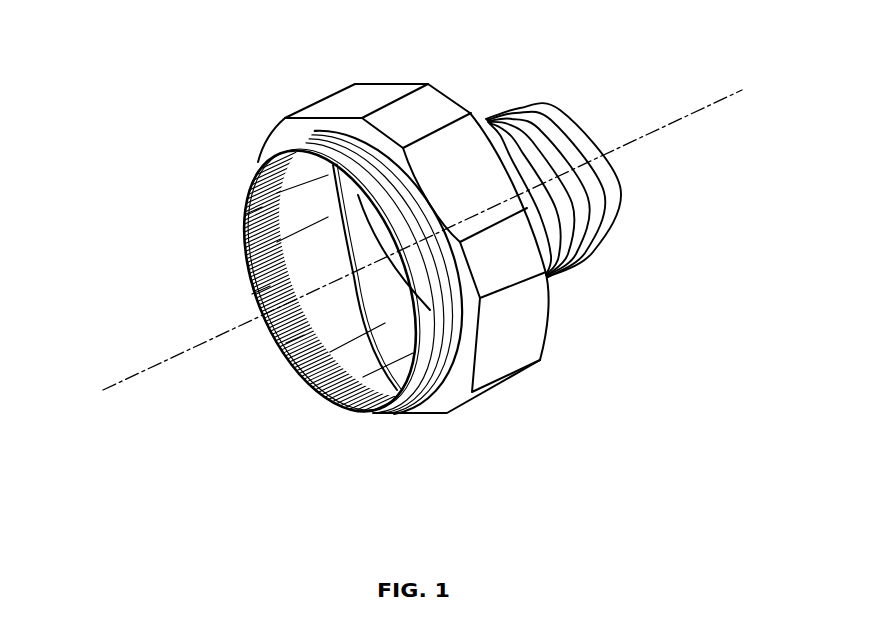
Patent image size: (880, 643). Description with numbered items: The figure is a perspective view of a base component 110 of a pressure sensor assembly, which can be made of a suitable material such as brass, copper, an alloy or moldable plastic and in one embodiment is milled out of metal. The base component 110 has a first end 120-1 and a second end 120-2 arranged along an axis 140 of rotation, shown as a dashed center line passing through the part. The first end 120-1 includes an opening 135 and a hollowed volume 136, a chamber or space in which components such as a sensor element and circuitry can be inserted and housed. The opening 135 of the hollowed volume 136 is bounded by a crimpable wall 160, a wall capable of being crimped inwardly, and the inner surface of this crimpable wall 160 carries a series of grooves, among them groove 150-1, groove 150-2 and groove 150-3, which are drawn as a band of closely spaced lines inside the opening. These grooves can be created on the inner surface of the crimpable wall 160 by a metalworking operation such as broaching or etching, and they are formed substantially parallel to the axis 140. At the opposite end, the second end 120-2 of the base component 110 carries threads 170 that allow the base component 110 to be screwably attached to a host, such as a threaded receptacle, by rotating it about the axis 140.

The base component 110 is at (265, 91).
The first end 120-1 is at (340, 255).
The second end 120-2 is at (624, 165).
The opening 135 is at (232, 238).
The hollowed volume 136 is at (300, 262).
The axis 140 is at (707, 108).
The groove 150-1 is at (256, 216).
The groove 150-2 is at (264, 298).
The groove 150-3 is at (298, 345).
The crimpable wall 160 is at (340, 157).
The threads 170 is at (561, 113).